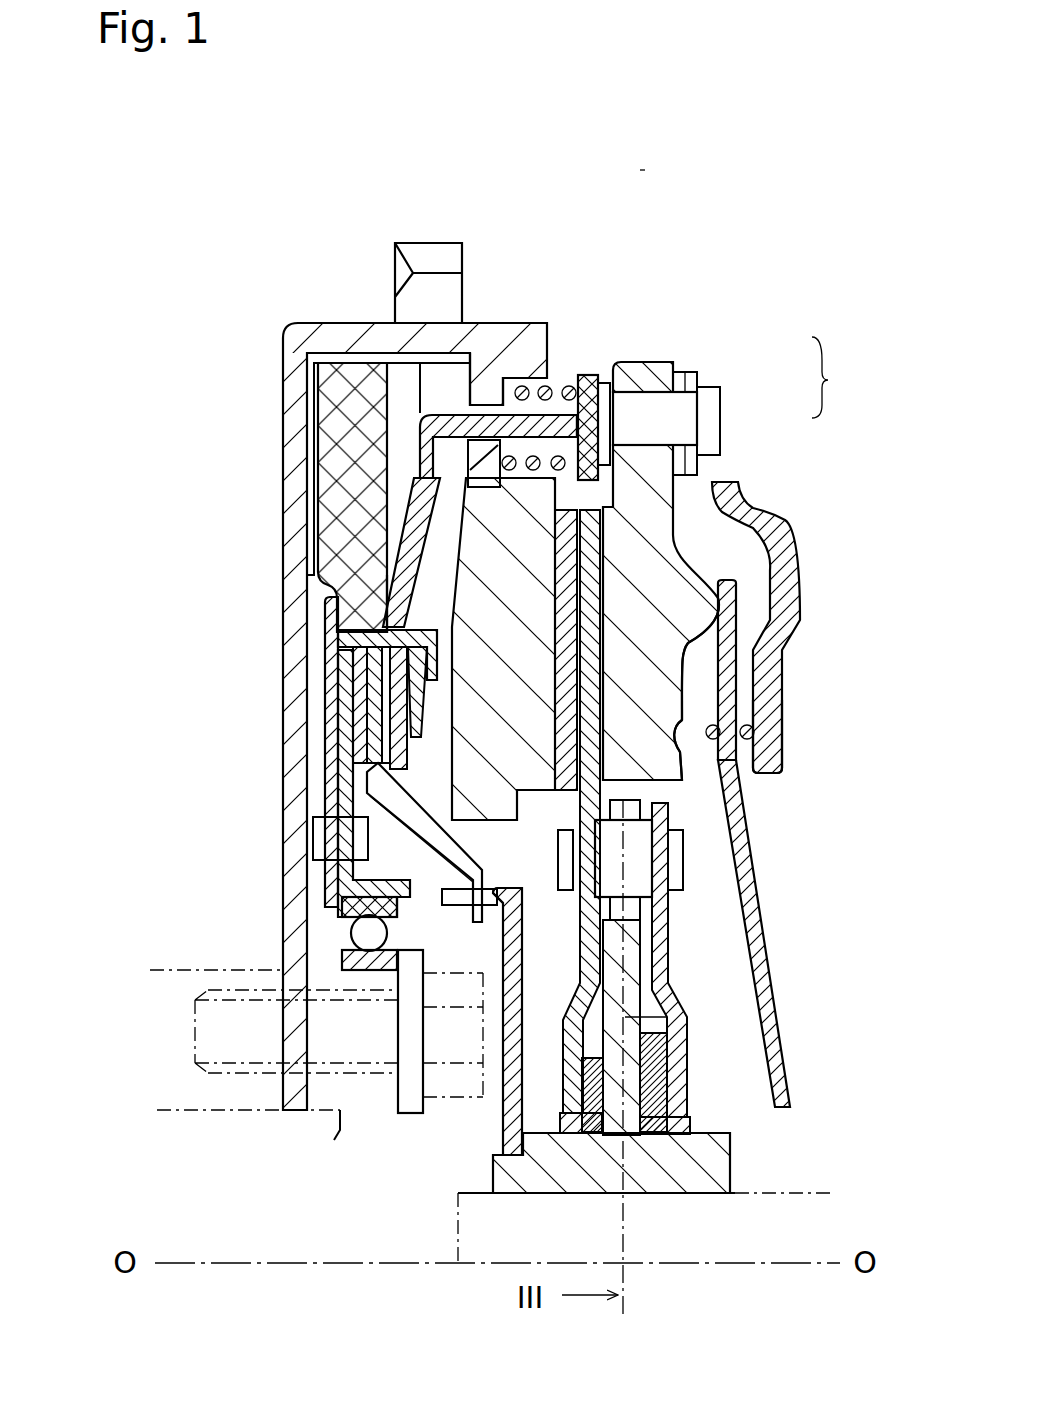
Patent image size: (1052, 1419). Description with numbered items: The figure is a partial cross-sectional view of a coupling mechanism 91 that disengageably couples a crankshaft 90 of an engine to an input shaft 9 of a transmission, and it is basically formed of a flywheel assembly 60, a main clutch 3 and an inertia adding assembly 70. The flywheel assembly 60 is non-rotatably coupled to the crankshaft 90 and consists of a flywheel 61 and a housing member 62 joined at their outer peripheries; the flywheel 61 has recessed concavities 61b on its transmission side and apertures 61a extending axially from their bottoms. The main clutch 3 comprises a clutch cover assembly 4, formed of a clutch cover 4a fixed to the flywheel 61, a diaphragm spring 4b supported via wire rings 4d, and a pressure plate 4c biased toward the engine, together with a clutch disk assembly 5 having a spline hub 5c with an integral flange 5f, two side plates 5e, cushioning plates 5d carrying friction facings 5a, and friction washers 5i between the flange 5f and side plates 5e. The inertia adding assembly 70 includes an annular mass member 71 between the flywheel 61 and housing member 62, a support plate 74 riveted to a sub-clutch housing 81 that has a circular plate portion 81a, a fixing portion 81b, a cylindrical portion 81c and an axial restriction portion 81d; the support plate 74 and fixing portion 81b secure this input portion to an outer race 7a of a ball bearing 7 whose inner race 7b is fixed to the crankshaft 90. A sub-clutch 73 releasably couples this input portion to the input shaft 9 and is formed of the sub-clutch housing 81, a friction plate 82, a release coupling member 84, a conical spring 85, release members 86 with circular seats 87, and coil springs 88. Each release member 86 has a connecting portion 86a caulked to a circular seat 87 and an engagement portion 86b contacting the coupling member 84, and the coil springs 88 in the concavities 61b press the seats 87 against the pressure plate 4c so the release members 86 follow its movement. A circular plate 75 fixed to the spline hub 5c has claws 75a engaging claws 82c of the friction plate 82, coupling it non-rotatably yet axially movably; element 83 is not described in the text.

The main clutch 3 is at (836, 377).
The clutch cover assembly 4 is at (668, 362).
The clutch cover 4a is at (775, 752).
The diaphragm spring 4b is at (777, 1043).
The pressure plate 4c is at (690, 688).
The wire rings 4d is at (725, 728).
The clutch disk assembly 5 is at (600, 500).
The friction facings 5a is at (770, 622).
The spline hub 5c is at (722, 1138).
The cushioning plates 5d is at (700, 835).
The side plates 5e is at (660, 945).
The flange 5f is at (655, 1012).
The friction washers 5i is at (650, 1120).
The ball bearing 7 is at (330, 935).
The outer race 7a is at (337, 930).
The inner race 7b is at (345, 950).
The input shaft 9 is at (745, 1200).
The flywheel assembly 60 is at (497, 262).
The flywheel 61 is at (715, 575).
The apertures 61a is at (407, 408).
The recessed concavities 61b is at (505, 385).
The housing member 62 is at (300, 420).
The inertia adding assembly 70 is at (410, 435).
The mass member 71 is at (345, 568).
The sub-clutch 73 is at (720, 520).
The support plate 74 is at (385, 812).
The circular plate 75 is at (507, 1120).
The claws 75a is at (478, 895).
The sub-clutch housing 81 is at (326, 735).
The circular plate portion 81a is at (352, 641).
The fixing portion 81b is at (410, 985).
The cylindrical portion 81c is at (326, 602).
The axial restriction portion 81d is at (697, 745).
The friction plate 82 is at (432, 856).
The claws 82c is at (520, 935).
The friction plates 83 is at (372, 690).
The release coupling member 84 is at (428, 605).
The conical spring 85 is at (418, 705).
The release members 86 is at (305, 370).
The connecting portion 86a is at (590, 412).
The engagement portion 86b is at (400, 438).
The circular seats 87 is at (600, 385).
The coil springs 88 is at (560, 410).
The crankshaft 90 is at (185, 985).
The coupling mechanism 91 is at (707, 188).